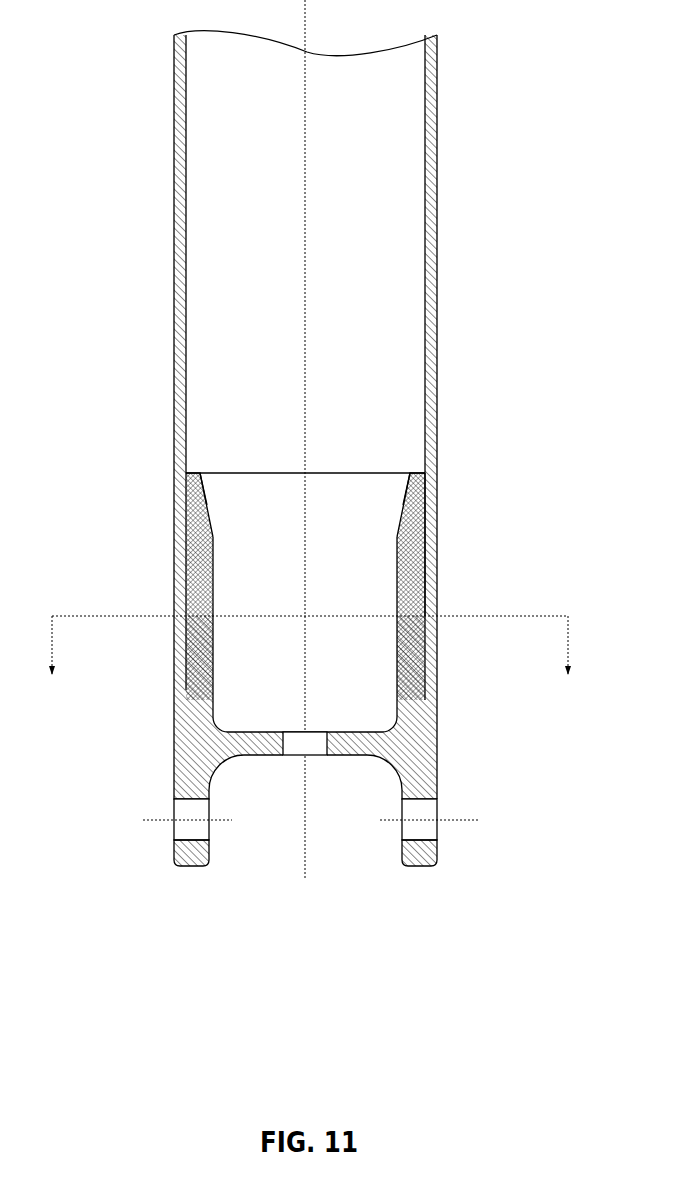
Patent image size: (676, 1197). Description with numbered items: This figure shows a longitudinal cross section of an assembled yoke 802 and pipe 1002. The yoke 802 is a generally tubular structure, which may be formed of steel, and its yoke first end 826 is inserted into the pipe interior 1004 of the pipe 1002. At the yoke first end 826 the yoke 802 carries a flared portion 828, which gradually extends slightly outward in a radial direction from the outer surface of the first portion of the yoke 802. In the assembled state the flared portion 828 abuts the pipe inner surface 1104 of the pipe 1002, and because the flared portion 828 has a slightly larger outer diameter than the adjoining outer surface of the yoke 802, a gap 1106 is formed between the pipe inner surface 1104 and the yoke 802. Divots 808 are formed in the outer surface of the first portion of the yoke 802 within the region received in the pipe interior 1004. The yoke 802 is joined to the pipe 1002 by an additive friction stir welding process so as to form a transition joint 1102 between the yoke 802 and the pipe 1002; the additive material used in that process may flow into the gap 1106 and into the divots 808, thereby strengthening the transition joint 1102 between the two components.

The pipe 1002 is at (183, 223).
The pipe inner surface 1104 is at (186, 355).
The pipe interior 1004 is at (330, 299).
The yoke 802 is at (190, 758).
The divots 808 is at (200, 560).
The flared portion 828 is at (195, 480).
The yoke first end 826 is at (418, 475).
The gap 1106 is at (425, 594).
The transition joint 1102 is at (185, 640).